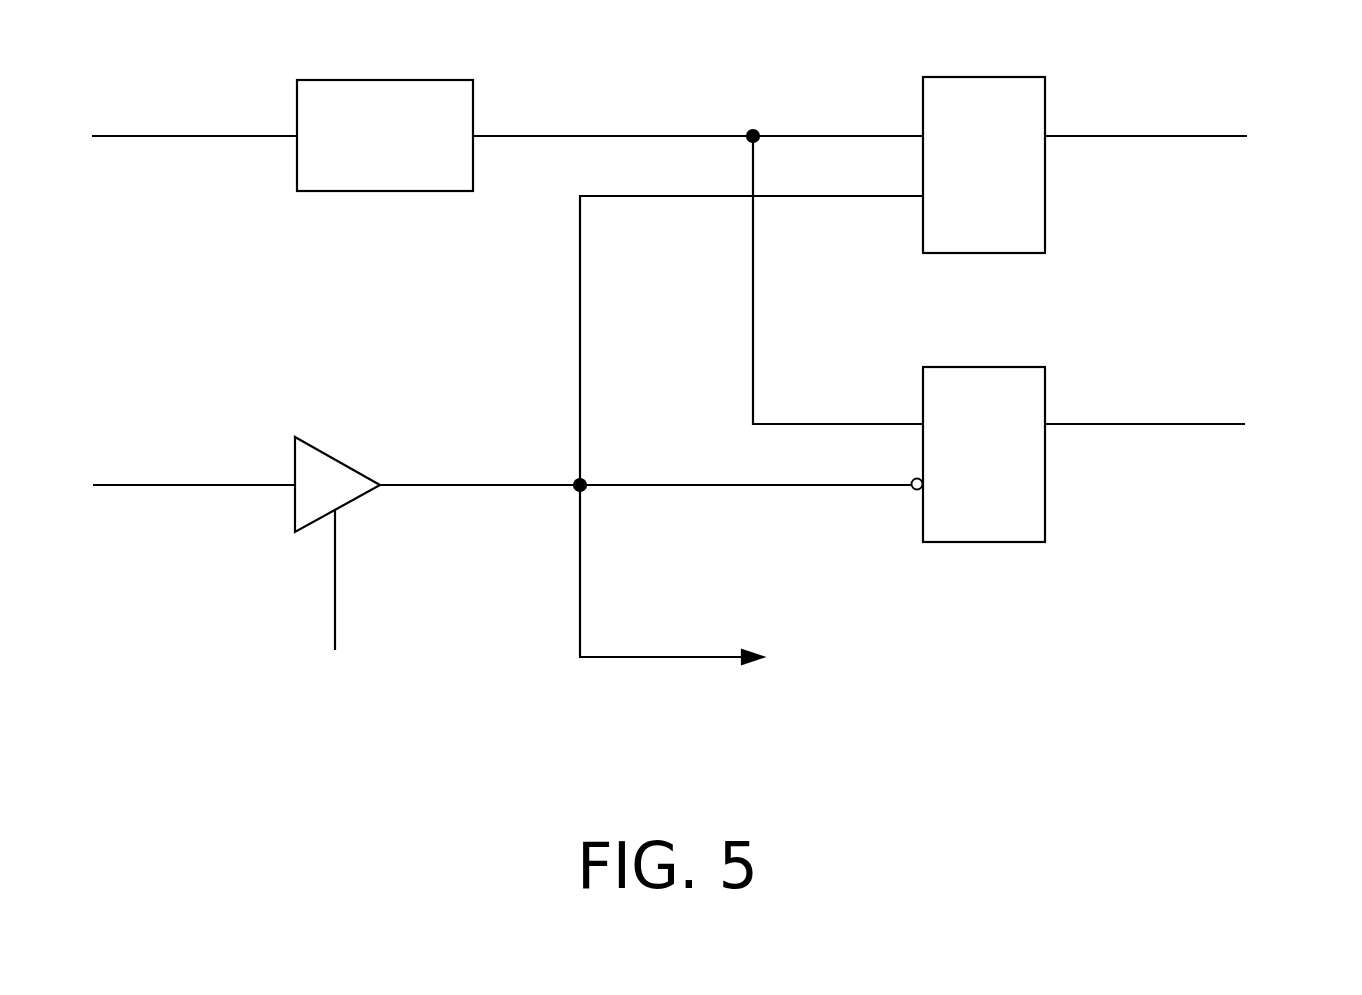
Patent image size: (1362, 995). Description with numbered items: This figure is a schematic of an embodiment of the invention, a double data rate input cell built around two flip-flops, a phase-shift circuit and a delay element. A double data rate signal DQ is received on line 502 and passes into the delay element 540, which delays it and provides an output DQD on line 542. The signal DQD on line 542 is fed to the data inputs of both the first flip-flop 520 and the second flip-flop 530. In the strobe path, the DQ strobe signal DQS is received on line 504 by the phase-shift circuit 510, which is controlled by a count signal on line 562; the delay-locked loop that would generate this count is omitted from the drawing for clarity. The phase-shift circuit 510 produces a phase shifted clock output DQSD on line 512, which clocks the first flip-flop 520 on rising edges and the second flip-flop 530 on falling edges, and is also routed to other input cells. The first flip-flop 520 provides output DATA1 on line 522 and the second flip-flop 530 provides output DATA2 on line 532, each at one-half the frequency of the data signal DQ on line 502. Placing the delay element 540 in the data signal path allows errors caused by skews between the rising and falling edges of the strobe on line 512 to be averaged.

The line 502 is at (160, 135).
The delay element 540 is at (382, 80).
The line 542 is at (520, 133).
The first flip-flop 520 is at (982, 77).
The line 522 is at (1095, 136).
The second flip-flop 530 is at (982, 367).
The line 532 is at (1080, 424).
The line 504 is at (160, 485).
The phase-shift circuit 510 is at (332, 455).
The line 512 is at (655, 485).
The line 562 is at (337, 570).